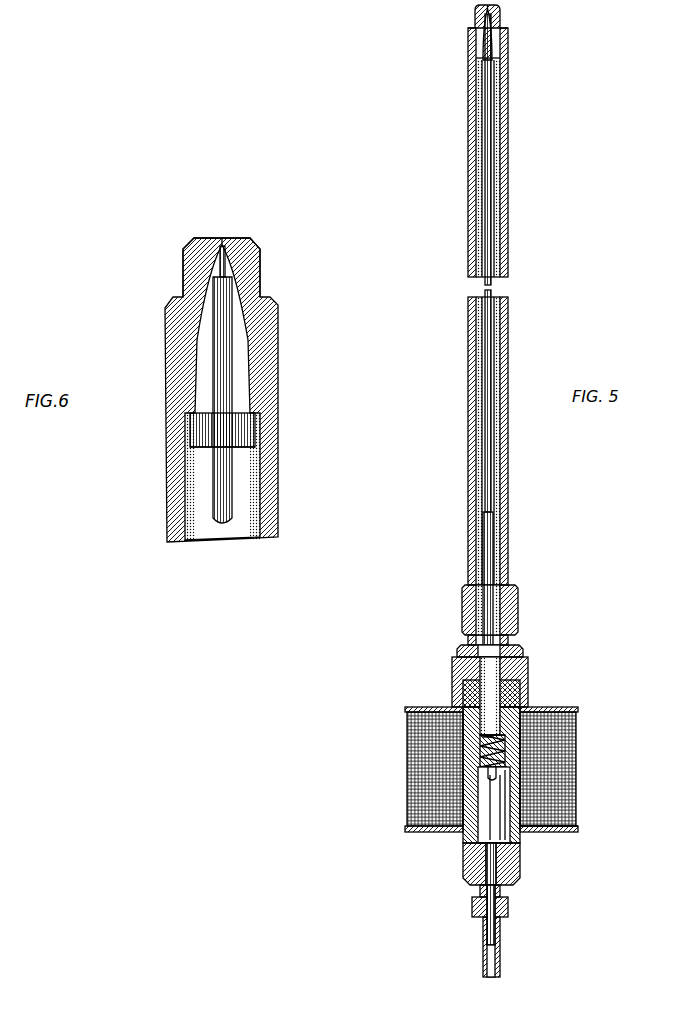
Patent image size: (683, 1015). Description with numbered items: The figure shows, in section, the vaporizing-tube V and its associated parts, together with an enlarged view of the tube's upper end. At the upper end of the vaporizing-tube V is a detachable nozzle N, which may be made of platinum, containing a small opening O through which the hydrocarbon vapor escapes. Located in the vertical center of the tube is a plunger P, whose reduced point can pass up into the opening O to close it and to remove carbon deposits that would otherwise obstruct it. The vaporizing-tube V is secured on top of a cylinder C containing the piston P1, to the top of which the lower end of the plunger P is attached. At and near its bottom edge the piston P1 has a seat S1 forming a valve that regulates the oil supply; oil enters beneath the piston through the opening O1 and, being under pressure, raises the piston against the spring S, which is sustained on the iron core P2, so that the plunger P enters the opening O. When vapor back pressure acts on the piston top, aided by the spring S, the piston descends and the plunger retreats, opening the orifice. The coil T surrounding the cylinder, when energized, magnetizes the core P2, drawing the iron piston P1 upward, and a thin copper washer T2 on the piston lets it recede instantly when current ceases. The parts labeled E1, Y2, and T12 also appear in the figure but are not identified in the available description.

In FIG. 5, the detachable nozzle N is at (476, 17).
In FIG. 6, the detachable nozzle N is at (252, 278).
In FIG. 5, the opening O is at (493, 11).
In FIG. 6, the opening O is at (226, 248).
In FIG. 5, the plunger P is at (490, 176).
In FIG. 6, the plunger P is at (232, 318).
In FIG. 5, the vaporizing-tube V is at (506, 410).
In FIG. 6, the vaporizing-tube V is at (280, 475).
In FIG. 5, the iron core P2 is at (527, 684).
In FIG. 5, the cylinder C is at (528, 700).
In FIG. 5, the coil T is at (412, 733).
In FIG. 5, the spring S is at (505, 752).
In FIG. 5, the copper washer T2 is at (496, 773).
In FIG. 5, the piston P1 is at (500, 795).
In FIG. 5, the chamber E1 is at (440, 808).
In FIG. 5, the bottom plate Y2 is at (520, 824).
In FIG. 5, the seat S1 is at (520, 838).
In FIG. 5, the opening O1 is at (520, 850).
In FIG. 5, the outlet tube T12 is at (500, 960).